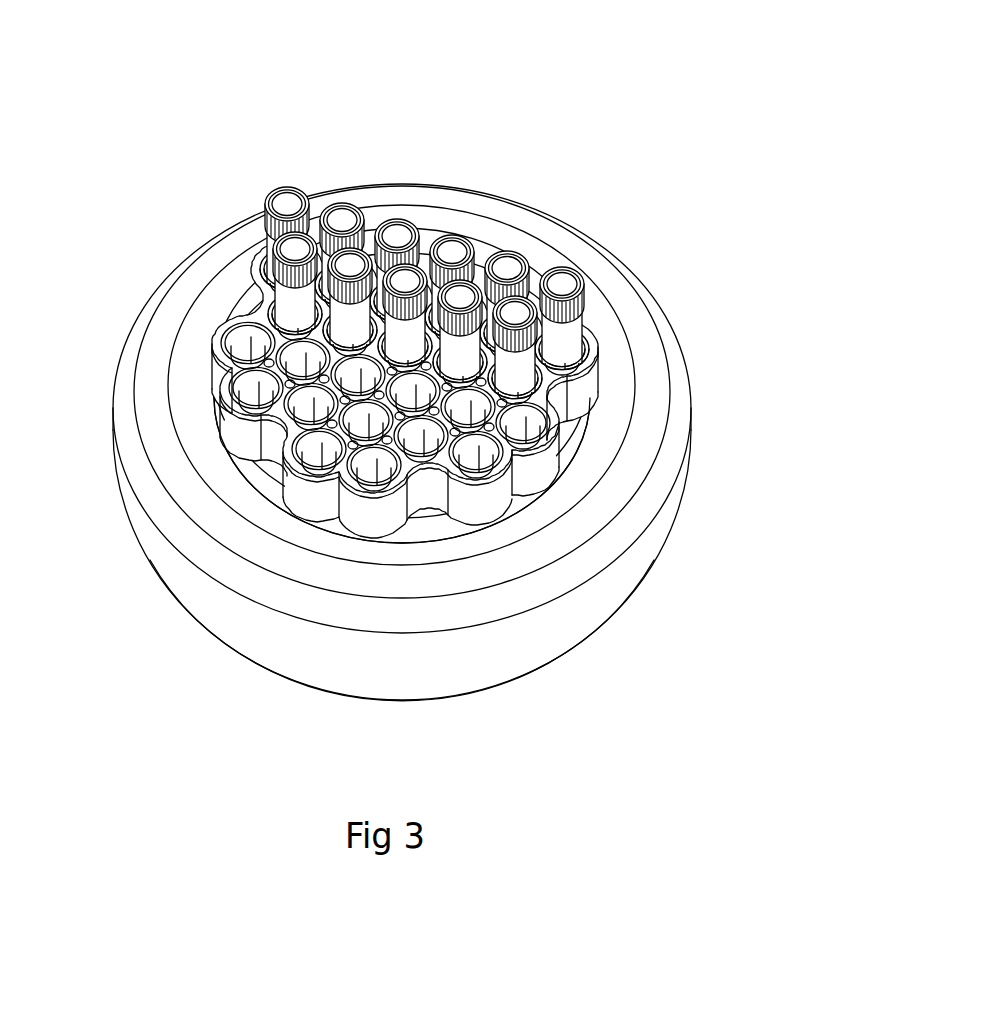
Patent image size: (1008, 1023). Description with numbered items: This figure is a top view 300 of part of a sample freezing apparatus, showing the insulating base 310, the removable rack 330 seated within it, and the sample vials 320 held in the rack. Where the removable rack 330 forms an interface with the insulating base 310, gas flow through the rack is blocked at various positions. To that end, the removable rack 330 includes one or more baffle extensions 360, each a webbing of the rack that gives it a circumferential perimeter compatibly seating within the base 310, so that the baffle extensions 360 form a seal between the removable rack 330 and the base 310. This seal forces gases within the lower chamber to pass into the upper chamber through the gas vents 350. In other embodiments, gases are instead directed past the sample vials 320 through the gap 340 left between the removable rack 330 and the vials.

The view 300 is at (474, 362).
The insulating base 310 is at (554, 211).
The sample vials 320 is at (533, 308).
The removable rack 330 is at (558, 397).
The gap 340 is at (523, 481).
The gas vents 350 is at (449, 423).
The baffle extension 360 is at (444, 537).